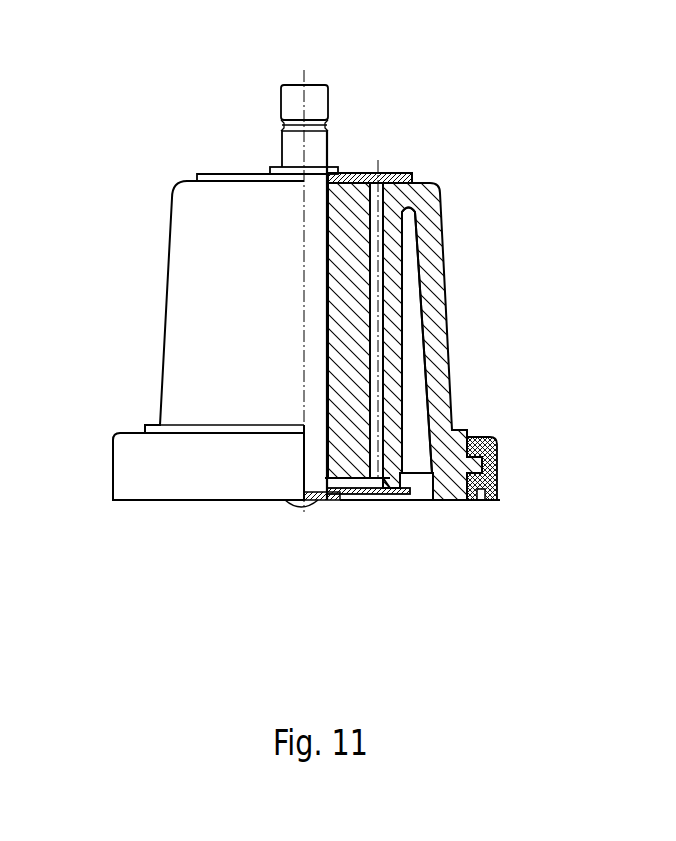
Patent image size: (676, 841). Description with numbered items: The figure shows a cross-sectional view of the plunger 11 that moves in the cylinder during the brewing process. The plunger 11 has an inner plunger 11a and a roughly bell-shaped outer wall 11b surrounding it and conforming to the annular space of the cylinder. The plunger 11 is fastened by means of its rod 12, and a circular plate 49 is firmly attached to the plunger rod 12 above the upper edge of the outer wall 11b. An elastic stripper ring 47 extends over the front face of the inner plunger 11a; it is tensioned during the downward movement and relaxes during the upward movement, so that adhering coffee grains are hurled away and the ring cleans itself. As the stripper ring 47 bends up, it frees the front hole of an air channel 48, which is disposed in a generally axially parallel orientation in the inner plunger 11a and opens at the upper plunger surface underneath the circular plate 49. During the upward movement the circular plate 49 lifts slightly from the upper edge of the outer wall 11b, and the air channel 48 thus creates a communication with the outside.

The plunger 11 is at (437, 327).
The inner plunger 11a is at (402, 423).
The outer wall 11b is at (193, 305).
The rod 12 is at (315, 157).
The elastic stripper ring 47 is at (386, 494).
The air channel 48 is at (345, 240).
The circular plate 49 is at (228, 177).